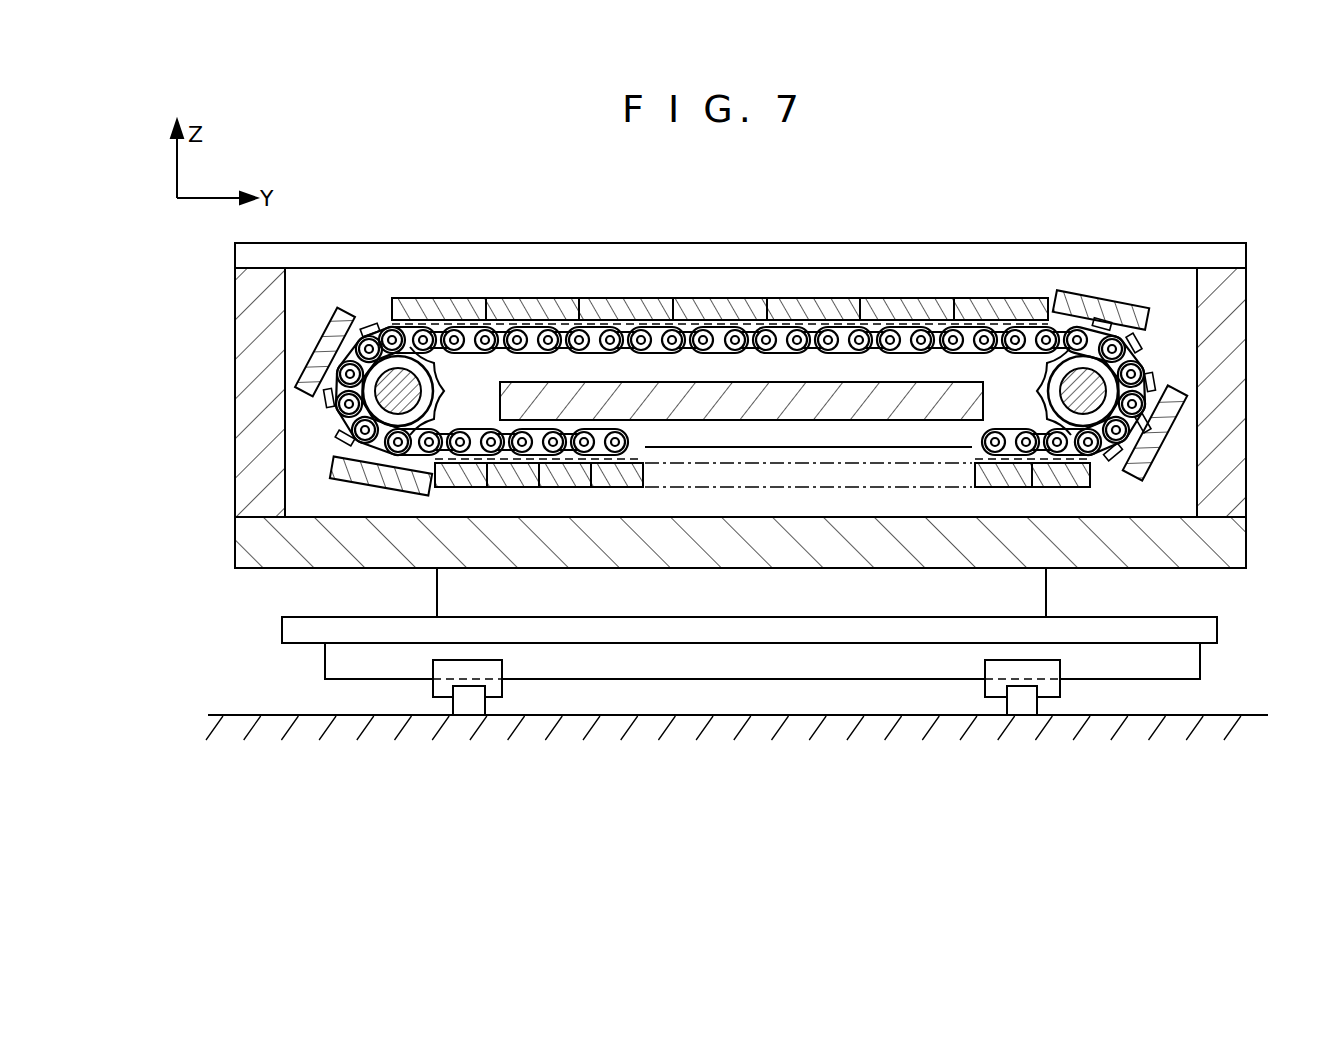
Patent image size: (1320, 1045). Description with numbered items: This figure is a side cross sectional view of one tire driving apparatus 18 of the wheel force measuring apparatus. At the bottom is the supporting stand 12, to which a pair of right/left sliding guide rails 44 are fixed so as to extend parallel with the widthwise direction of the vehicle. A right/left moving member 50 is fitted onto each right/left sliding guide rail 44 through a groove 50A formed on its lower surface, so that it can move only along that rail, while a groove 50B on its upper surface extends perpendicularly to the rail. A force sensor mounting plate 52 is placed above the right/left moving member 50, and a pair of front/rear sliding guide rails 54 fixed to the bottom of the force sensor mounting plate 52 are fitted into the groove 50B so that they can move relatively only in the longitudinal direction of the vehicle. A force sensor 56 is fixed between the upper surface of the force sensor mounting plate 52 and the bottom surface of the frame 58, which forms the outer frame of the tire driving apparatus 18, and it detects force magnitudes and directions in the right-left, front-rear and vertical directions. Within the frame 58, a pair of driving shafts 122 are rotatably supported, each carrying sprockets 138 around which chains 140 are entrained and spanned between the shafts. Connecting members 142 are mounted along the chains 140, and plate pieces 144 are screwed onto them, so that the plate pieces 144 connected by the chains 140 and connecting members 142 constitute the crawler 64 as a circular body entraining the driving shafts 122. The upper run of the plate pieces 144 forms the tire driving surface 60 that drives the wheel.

The supporting stand 12 is at (730, 776).
The tire driving apparatus 18 is at (1188, 224).
The right/left sliding guide rail 44 is at (463, 702).
The right/left moving member 50 is at (493, 698).
The groove 50A is at (452, 707).
The groove 50B is at (505, 672).
The force sensor mounting plate 52 is at (1208, 632).
The front/rear sliding guide rail 54 is at (1176, 668).
The force sensor 56 is at (1047, 601).
The frame 58 is at (1247, 463).
The tire driving surface 60 is at (654, 298).
The crawler 64 is at (1022, 296).
The driving shaft 122 is at (1147, 356).
The sprocket 138 is at (443, 368).
The chain 140 is at (648, 450).
The connecting member 142 is at (369, 324).
The plate piece 144 is at (742, 298).